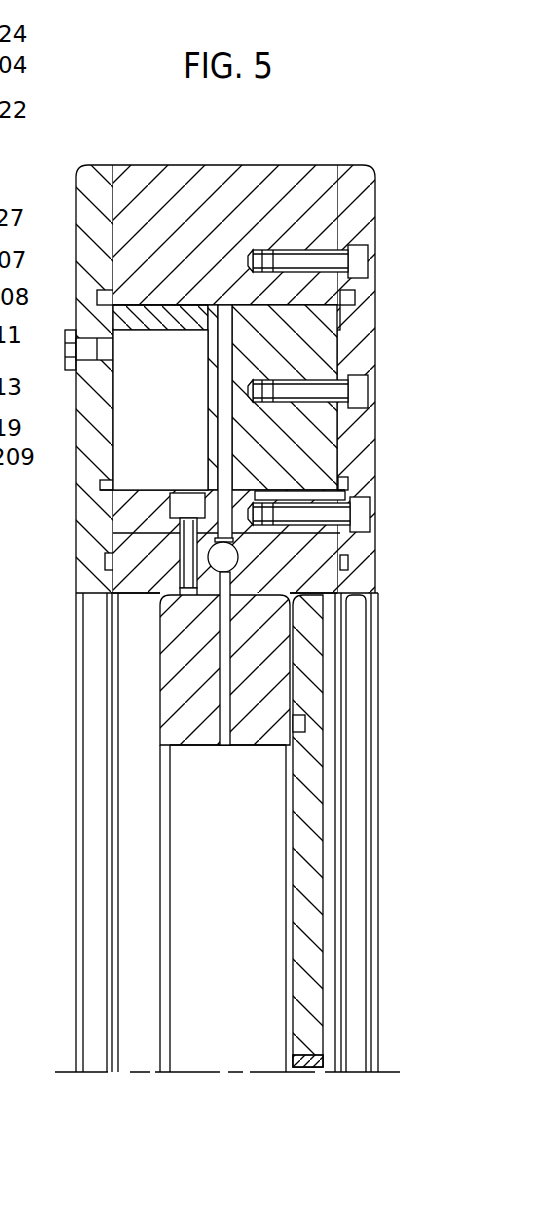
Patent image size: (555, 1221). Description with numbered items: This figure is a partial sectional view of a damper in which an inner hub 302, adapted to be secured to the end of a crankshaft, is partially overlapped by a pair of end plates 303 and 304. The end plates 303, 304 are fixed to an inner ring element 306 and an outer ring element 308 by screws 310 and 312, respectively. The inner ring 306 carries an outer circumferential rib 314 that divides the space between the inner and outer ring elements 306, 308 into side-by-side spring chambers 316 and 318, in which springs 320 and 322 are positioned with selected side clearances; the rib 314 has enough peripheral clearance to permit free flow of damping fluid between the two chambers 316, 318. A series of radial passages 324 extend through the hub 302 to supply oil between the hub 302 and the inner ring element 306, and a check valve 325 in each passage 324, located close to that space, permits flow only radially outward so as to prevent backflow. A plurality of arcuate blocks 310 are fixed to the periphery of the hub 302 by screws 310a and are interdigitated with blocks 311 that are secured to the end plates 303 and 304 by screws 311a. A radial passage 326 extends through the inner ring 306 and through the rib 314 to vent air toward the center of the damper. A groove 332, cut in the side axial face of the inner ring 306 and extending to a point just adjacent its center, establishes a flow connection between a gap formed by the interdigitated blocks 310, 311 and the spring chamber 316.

The inner hub 302 is at (180, 705).
The end plate 303 is at (72, 188).
The end plate 304 is at (352, 190).
The inner ring element 306 is at (320, 447).
The outer ring element 308 is at (300, 225).
The screws / arcuate blocks 310 is at (360, 386).
The screws 310a is at (176, 575).
The arcuate blocks 311 is at (313, 497).
The screws 311a is at (358, 520).
The screws 312 is at (362, 262).
The outer circumferential rib 314 is at (238, 305).
The spring chamber 316 is at (157, 305).
The spring chamber 318 is at (310, 305).
The spring 320 is at (183, 318).
The spring 322 is at (312, 320).
The radial passages 324 is at (228, 665).
The check valve 325 is at (237, 560).
The radial passage 326 is at (237, 418).
The groove 332 is at (130, 440).